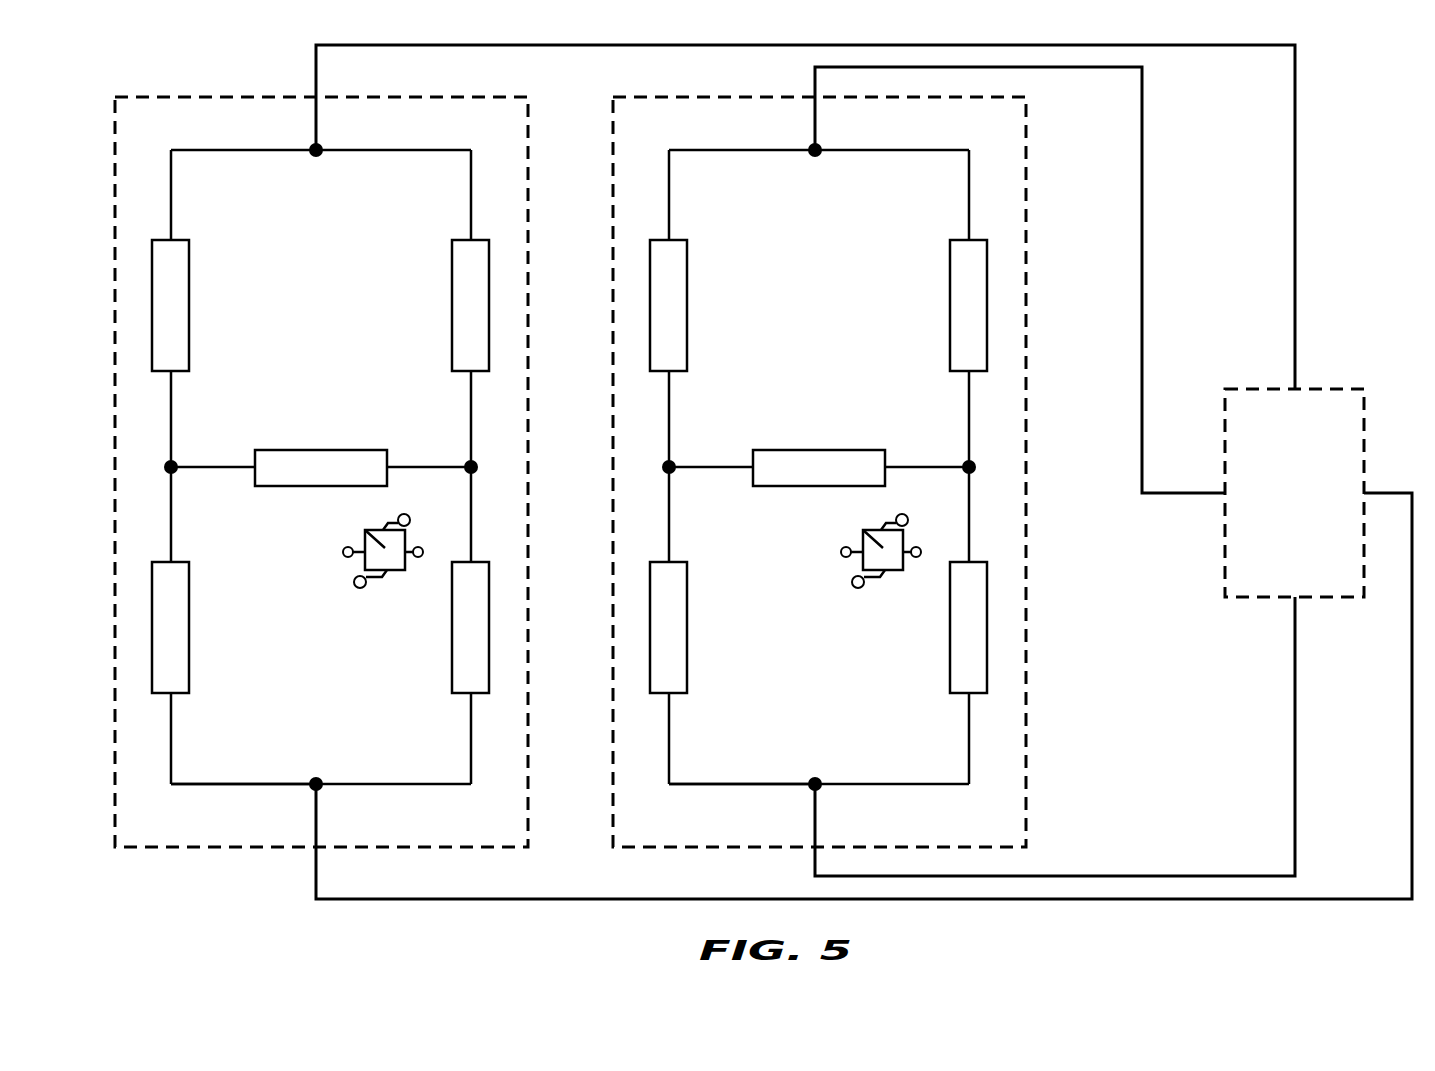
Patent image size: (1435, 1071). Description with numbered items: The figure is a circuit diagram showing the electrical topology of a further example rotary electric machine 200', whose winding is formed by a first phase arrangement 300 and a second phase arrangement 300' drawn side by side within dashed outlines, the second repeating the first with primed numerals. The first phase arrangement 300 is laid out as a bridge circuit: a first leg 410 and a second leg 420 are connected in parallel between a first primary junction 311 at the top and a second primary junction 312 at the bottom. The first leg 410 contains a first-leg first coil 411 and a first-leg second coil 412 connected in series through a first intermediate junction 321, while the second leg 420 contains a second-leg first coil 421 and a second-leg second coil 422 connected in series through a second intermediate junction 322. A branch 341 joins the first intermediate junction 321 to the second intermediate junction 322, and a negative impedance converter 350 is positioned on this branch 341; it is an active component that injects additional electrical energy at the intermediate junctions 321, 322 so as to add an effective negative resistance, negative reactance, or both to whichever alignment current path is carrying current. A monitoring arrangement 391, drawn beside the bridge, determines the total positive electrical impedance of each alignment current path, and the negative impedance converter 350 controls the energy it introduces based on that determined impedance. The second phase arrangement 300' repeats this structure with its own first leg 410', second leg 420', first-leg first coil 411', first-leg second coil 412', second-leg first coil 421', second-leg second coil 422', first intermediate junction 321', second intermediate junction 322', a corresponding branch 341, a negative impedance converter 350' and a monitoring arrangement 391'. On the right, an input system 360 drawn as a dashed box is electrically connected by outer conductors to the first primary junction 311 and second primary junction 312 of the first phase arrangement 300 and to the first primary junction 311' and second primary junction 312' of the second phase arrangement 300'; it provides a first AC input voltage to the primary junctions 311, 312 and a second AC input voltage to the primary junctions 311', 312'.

The rotary electric machine 200' is at (868, 472).
The input system 360 is at (1316, 507).
The first phase arrangement 300 is at (321, 472).
The second phase arrangement 300' is at (819, 472).
The first primary junction 311 is at (329, 188).
The first primary junction 311' is at (830, 188).
The second primary junction 312 is at (319, 742).
The second primary junction 312' is at (820, 742).
The first intermediate junction 321 is at (205, 503).
The first intermediate junction 321' is at (706, 503).
The second intermediate junction 322 is at (432, 434).
The second intermediate junction 322' is at (930, 434).
The branch 341 is at (203, 466).
The negative impedance converter 350 is at (363, 433).
The negative impedance converter 350' is at (861, 433).
The monitoring arrangement 391 is at (339, 551).
The monitoring arrangement 391' is at (835, 551).
The first leg 410 is at (321, 192).
The first leg 410' is at (819, 192).
The first-leg first coil 411 is at (423, 305).
The first-leg first coil 411' is at (922, 305).
The first-leg second coil 412 is at (423, 627).
The first-leg second coil 412' is at (921, 627).
The second leg 420 is at (243, 746).
The second leg 420' is at (742, 746).
The second-leg first coil 421 is at (217, 305).
The second-leg first coil 421' is at (718, 305).
The second-leg second coil 422 is at (218, 627).
The second-leg second coil 422' is at (719, 627).